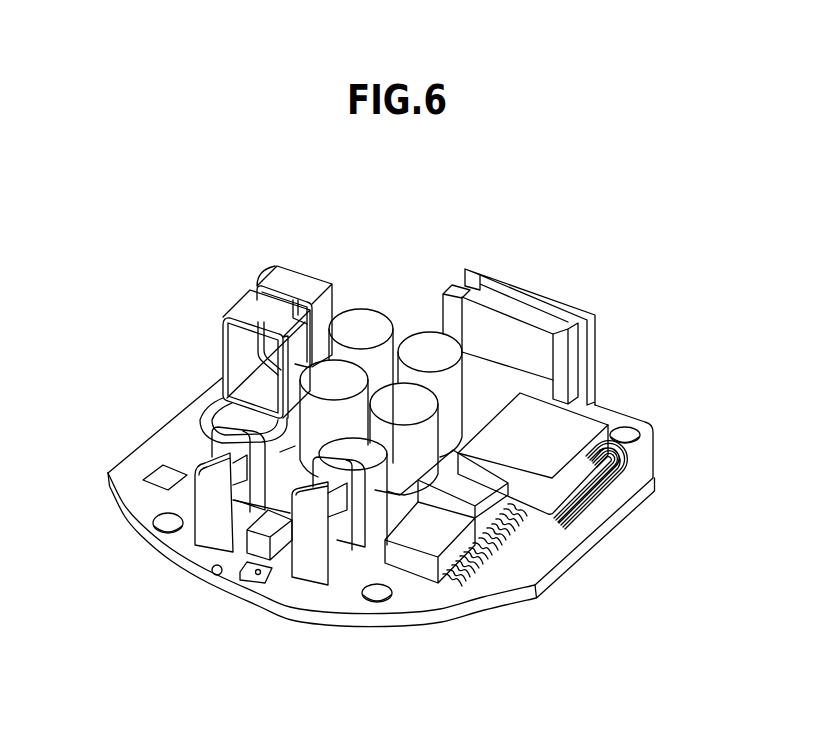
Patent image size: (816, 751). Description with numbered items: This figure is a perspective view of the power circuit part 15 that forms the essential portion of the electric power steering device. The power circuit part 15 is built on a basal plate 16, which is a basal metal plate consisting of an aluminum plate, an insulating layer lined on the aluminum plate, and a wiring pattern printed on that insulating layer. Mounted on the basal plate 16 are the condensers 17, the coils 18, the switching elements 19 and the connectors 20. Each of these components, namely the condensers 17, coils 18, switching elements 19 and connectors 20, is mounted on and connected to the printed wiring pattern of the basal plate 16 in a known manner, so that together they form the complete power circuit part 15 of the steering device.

The power circuit part 15 is at (657, 427).
The basal plate 16 is at (608, 532).
The condensers 17 is at (365, 322).
The coils 18 is at (555, 447).
The switching elements 19 is at (430, 535).
The connectors 20 is at (245, 305).